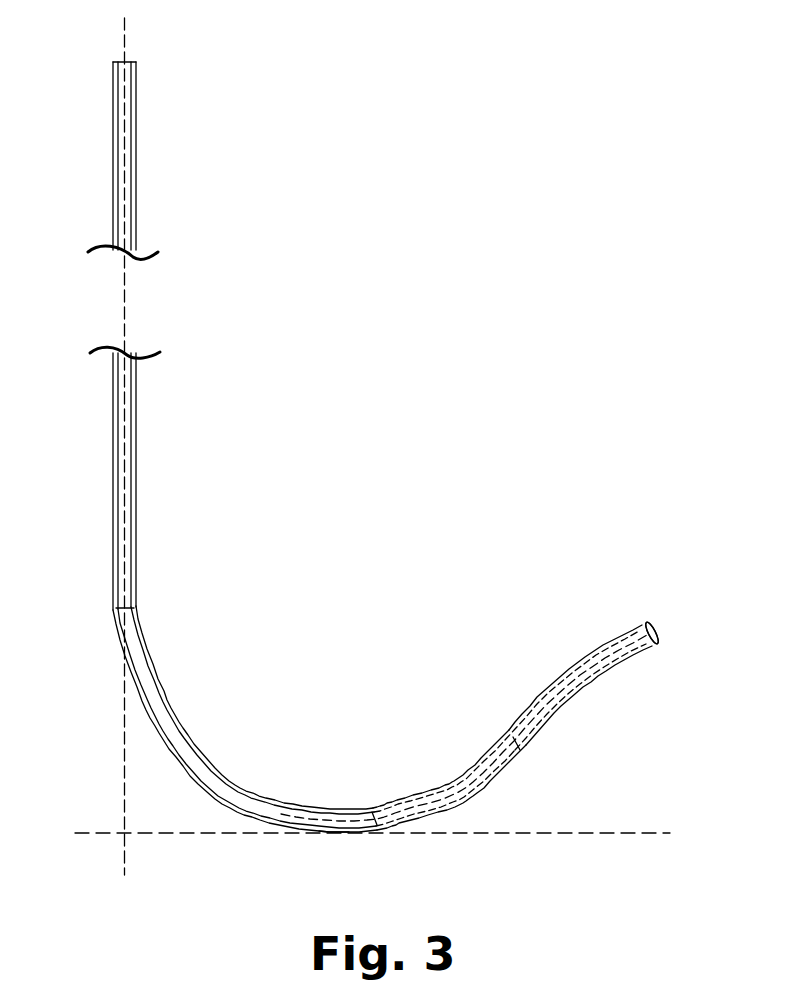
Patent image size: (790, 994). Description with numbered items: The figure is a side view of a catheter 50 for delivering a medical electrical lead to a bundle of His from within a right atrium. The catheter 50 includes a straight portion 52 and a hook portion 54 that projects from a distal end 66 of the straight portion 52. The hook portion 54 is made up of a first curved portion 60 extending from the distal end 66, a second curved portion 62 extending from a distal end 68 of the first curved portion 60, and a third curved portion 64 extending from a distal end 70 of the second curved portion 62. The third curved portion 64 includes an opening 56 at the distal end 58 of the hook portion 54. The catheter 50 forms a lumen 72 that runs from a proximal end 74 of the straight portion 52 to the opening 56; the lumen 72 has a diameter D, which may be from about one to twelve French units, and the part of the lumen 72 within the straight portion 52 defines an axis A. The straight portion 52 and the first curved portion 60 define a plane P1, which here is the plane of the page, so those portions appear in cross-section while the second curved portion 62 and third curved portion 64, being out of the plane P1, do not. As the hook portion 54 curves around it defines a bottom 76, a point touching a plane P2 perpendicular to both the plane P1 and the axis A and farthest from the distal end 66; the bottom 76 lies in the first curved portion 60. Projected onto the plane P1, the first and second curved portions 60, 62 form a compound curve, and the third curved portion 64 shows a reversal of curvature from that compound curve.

The catheter 50 is at (112, 155).
The proximal end 74 is at (137, 62).
The straight portion 52 is at (138, 428).
The lumen 72 is at (119, 483).
The distal end 66 is at (113, 601).
The hook portion 54 is at (151, 742).
The first curved portion 60 is at (199, 749).
The distal end 68 is at (372, 812).
The second curved portion 62 is at (446, 787).
The distal end 70 is at (519, 758).
The third curved portion 64 is at (578, 663).
The distal end 58 is at (650, 623).
The opening 56 is at (658, 634).
The bottom 76 is at (333, 834).
The axis A is at (124, 33).
The diameter D is at (63, 97).
The plane P1 is at (377, 381).
The plane P2 is at (637, 831).